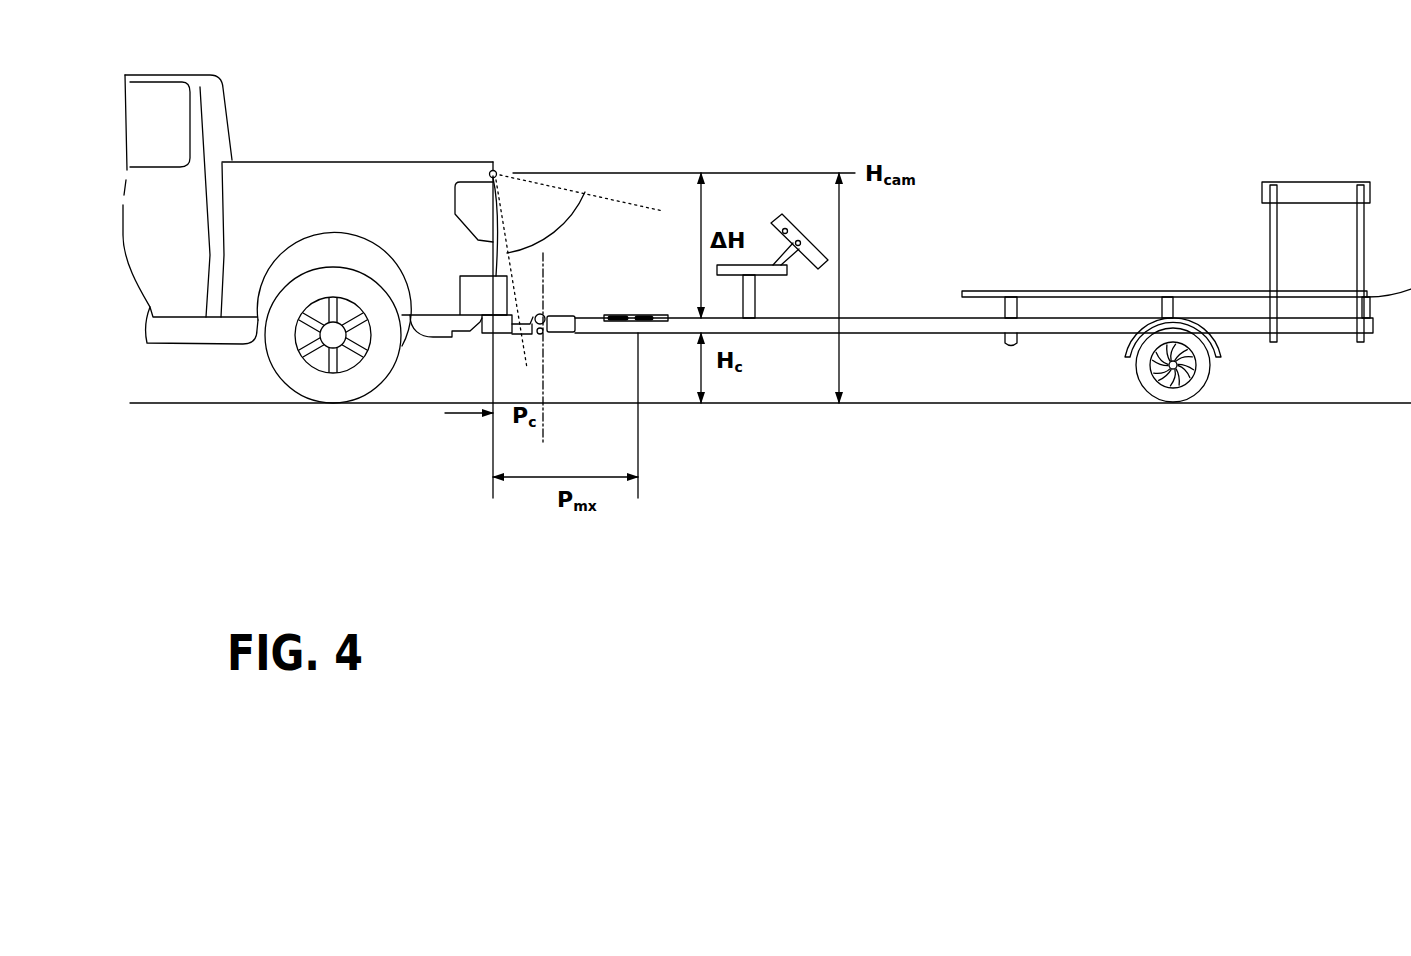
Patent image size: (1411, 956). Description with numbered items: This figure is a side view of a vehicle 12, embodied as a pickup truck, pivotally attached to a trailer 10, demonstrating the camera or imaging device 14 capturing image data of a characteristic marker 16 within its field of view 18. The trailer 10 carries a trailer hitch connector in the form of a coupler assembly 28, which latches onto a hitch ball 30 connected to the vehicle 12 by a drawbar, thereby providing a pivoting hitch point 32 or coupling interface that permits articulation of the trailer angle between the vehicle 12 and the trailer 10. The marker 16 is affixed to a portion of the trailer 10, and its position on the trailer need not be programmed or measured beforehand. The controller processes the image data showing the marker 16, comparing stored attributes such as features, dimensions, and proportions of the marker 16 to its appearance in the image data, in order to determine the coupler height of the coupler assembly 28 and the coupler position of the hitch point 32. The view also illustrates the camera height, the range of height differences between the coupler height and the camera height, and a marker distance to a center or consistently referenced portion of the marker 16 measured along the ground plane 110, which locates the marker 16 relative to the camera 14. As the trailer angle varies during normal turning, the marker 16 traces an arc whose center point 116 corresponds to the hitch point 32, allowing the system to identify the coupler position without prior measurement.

The trailer 10 is at (982, 291).
The vehicle 12 is at (430, 160).
The imaging device 14 is at (497, 170).
The characteristic marker 16 is at (614, 316).
The field of view 18 is at (588, 208).
The coupler assembly 28 is at (558, 315).
The hitch ball 30 is at (538, 315).
The hitch point 32 is at (561, 324).
The ground plane 110 is at (913, 403).
The center point 116 is at (545, 272).